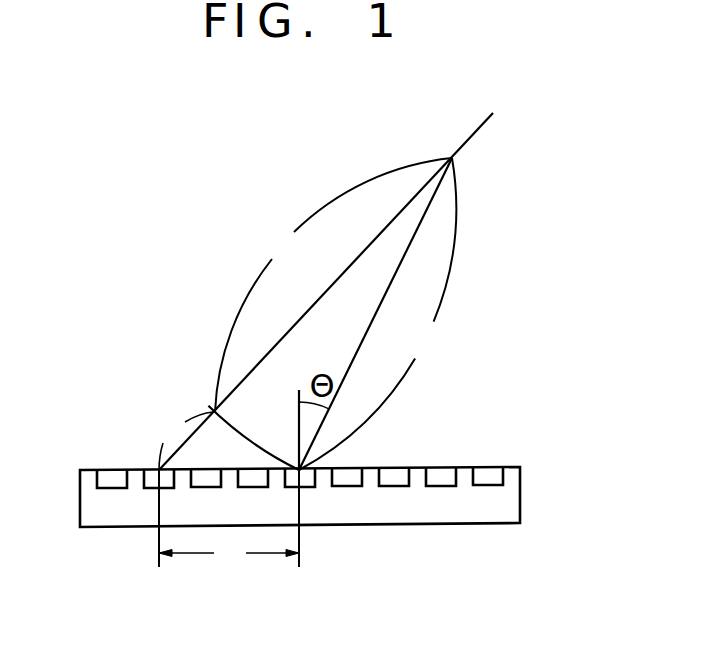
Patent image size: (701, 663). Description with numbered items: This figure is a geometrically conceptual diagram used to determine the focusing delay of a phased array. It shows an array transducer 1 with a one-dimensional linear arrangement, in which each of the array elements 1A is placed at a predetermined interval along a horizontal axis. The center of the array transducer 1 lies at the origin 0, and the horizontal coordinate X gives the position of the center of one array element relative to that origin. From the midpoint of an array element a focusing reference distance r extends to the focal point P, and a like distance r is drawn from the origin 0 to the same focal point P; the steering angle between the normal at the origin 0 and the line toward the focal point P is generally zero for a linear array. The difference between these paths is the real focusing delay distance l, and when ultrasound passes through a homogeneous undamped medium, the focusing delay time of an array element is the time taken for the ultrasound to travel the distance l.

The array transducer 1 is at (85, 510).
The array elements 1A is at (112, 477).
The focal point P is at (328, 291).
The origin 0 is at (268, 430).
The focusing reference distance r is at (335, 314).
The real focusing delay distance l is at (186, 438).
The horizontal coordinate X is at (229, 519).